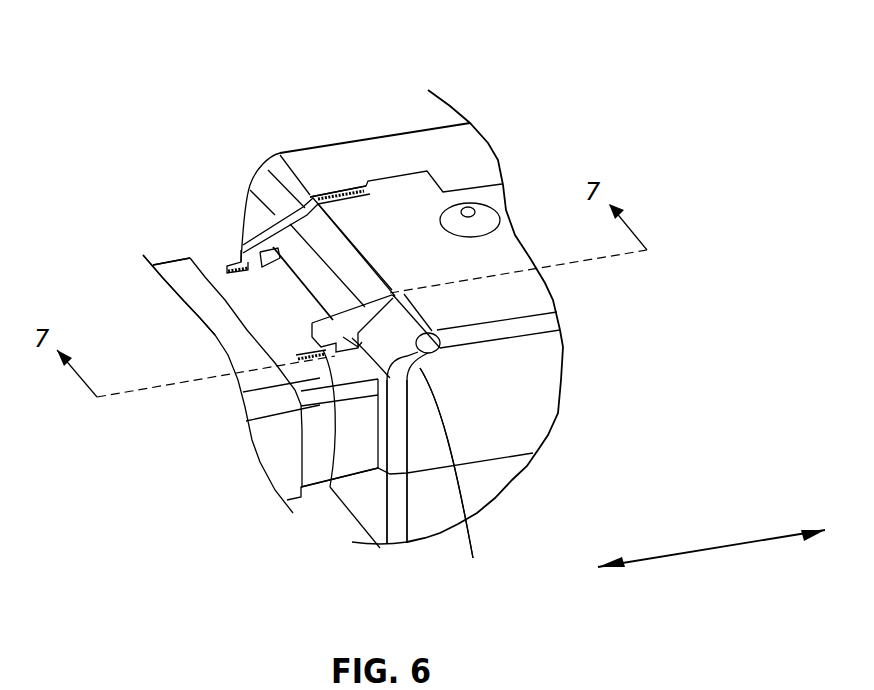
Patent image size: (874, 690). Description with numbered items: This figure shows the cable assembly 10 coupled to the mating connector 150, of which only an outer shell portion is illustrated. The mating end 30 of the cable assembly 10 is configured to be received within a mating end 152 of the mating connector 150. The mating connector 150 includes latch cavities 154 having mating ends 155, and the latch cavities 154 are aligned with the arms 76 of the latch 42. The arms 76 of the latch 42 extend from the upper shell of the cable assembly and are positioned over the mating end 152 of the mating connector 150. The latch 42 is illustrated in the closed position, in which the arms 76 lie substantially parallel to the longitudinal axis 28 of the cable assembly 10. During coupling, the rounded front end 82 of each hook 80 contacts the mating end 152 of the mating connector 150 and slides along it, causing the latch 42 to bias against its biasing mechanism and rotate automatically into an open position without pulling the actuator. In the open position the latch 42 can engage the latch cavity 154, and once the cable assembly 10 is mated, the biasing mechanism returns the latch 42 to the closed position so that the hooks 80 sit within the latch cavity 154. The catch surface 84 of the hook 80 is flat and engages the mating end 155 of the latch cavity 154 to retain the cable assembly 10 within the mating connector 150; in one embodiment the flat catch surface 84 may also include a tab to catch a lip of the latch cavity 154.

The cable assembly 10 is at (547, 55).
The longitudinal axis 28 is at (735, 548).
The mating end 30 is at (150, 120).
The latch 42 is at (257, 185).
The arms 76 is at (313, 335).
The hook 80 is at (243, 238).
The rounded front end 82 is at (229, 264).
The catch surface 84 is at (458, 520).
The mating connector 150 is at (175, 273).
The mating end 152 is at (373, 493).
The latch cavities 154 is at (295, 350).
The mating ends 155 is at (328, 487).